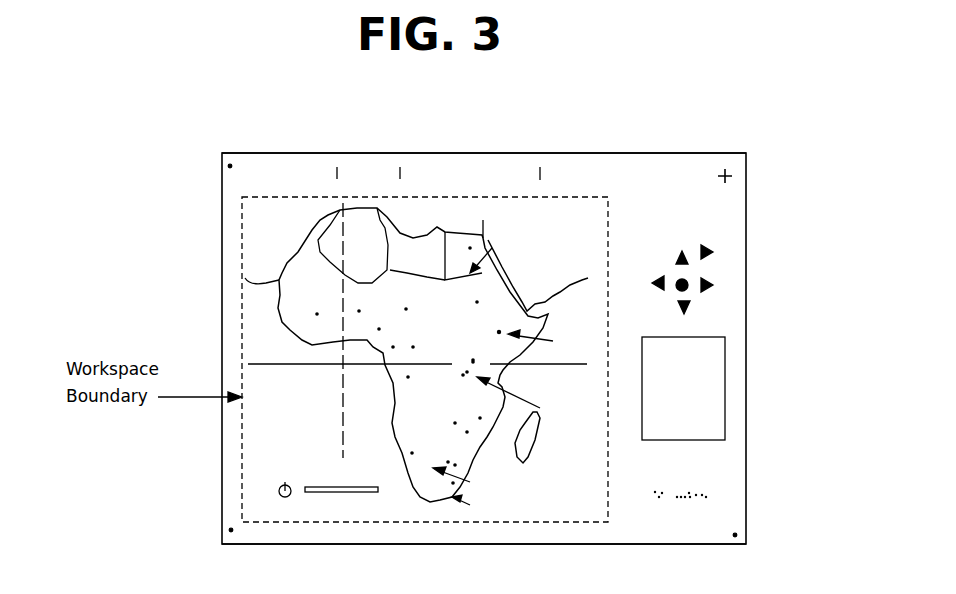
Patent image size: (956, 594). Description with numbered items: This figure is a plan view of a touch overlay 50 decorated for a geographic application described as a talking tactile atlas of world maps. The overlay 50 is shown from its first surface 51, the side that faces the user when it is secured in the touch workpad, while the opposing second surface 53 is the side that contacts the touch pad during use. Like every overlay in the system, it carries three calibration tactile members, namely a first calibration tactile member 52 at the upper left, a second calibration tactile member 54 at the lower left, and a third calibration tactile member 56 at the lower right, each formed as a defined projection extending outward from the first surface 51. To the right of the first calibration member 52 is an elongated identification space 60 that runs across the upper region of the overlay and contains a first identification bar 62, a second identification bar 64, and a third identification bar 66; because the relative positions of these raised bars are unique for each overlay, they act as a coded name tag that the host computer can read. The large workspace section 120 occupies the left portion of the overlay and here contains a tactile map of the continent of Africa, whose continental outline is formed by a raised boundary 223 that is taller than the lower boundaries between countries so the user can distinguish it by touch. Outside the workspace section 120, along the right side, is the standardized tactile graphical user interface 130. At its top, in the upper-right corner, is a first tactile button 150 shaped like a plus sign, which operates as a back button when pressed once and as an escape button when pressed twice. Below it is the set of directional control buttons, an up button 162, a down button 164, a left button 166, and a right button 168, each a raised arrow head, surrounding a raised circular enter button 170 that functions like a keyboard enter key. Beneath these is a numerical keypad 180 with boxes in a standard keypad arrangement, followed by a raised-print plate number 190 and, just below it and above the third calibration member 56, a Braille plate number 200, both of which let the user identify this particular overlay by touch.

The touch overlay 50 is at (459, 134).
The first surface 51 is at (635, 153).
The first calibration tactile member 52 is at (230, 165).
The second surface 53 is at (490, 545).
The second calibration tactile member 54 is at (231, 531).
The third calibration tactile member 56 is at (736, 536).
The identification space 60 is at (292, 163).
The first identification bar 62 is at (338, 176).
The second identification bar 64 is at (401, 176).
The third identification bar 66 is at (541, 176).
The workspace section 120 is at (262, 225).
The tactile graphical user interface (TGUI) 130 is at (725, 267).
The first tactile button 150 is at (731, 181).
The up button 162 is at (676, 261).
The down button 164 is at (675, 309).
The left button 166 is at (657, 277).
The right button 168 is at (711, 291).
The enter button 170 is at (689, 278).
The numerical keypad 180 is at (726, 408).
The raised-print plate number 190 is at (718, 464).
The Braille plate number 200 is at (674, 507).
The raised boundary 223 is at (262, 283).